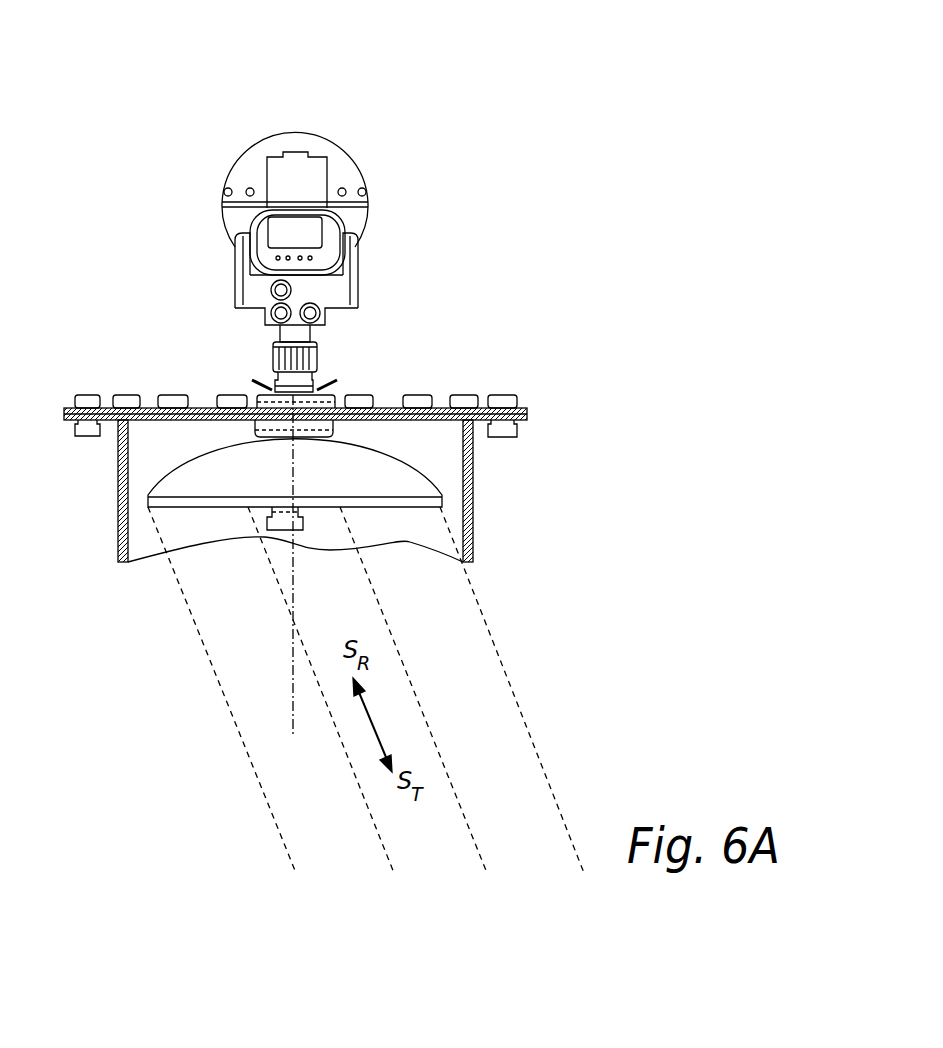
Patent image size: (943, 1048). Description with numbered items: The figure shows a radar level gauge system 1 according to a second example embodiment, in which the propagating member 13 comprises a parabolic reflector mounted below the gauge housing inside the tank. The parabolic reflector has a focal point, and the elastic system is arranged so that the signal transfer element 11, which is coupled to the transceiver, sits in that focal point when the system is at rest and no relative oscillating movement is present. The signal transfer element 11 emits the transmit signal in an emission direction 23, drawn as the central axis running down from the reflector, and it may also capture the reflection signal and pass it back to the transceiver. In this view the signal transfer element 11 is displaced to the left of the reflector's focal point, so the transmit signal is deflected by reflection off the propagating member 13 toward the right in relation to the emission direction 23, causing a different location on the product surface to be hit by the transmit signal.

The radar level gauge system 1 is at (442, 88).
The signal transfer element 11 is at (283, 530).
The propagating member 13 is at (397, 477).
The emission direction 23 is at (293, 706).